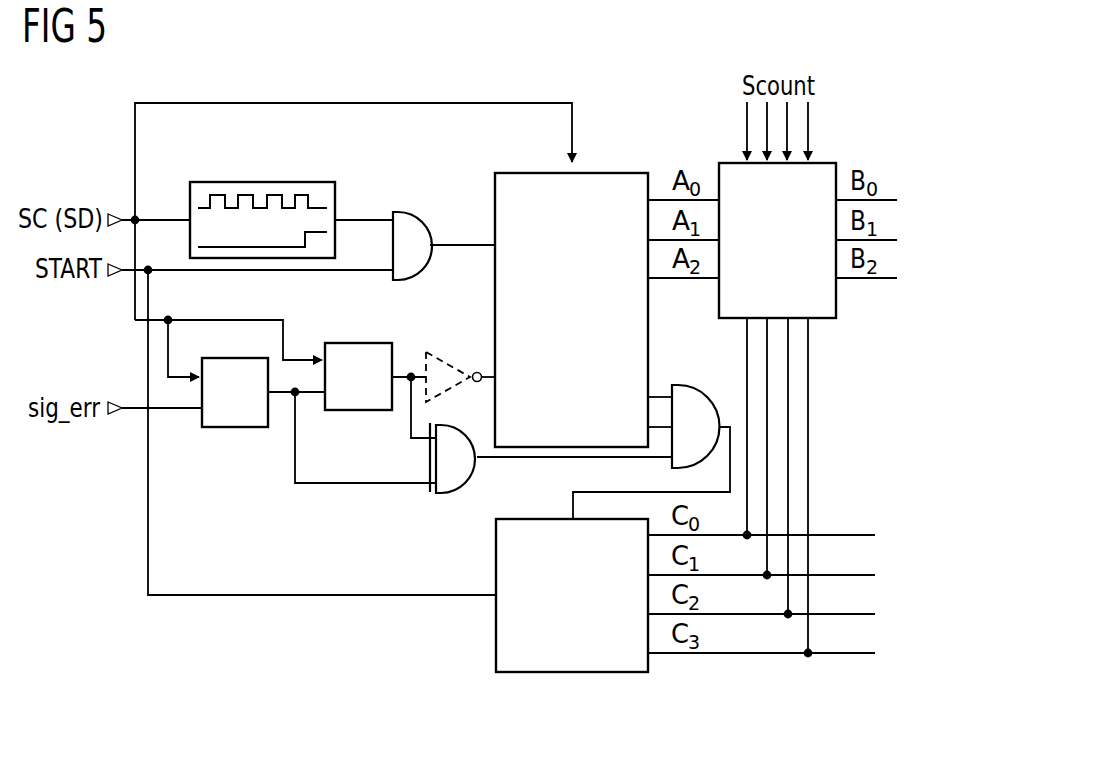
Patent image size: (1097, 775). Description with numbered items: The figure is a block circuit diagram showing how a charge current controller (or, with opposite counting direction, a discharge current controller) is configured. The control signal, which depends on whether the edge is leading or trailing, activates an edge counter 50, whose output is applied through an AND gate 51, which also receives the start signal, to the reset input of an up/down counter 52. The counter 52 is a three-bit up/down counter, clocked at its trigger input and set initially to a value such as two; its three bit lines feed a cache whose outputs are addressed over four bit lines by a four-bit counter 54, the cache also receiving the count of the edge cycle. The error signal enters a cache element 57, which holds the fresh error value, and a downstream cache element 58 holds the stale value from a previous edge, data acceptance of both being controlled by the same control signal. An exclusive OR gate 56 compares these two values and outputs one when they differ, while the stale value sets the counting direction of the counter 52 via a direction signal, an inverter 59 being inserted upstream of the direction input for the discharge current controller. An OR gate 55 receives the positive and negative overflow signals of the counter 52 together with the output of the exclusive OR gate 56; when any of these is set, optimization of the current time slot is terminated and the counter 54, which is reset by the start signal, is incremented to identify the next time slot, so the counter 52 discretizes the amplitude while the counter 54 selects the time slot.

The edge counter 50 is at (262, 180).
The AND gate 51 is at (423, 213).
The up/down counter 52 is at (610, 171).
The counter 54 is at (572, 674).
The OR gate 55 is at (690, 385).
The exclusive OR gate 56 is at (470, 475).
The cache element 57 is at (236, 428).
The cache element 58 is at (357, 412).
The inverter 59 is at (455, 362).